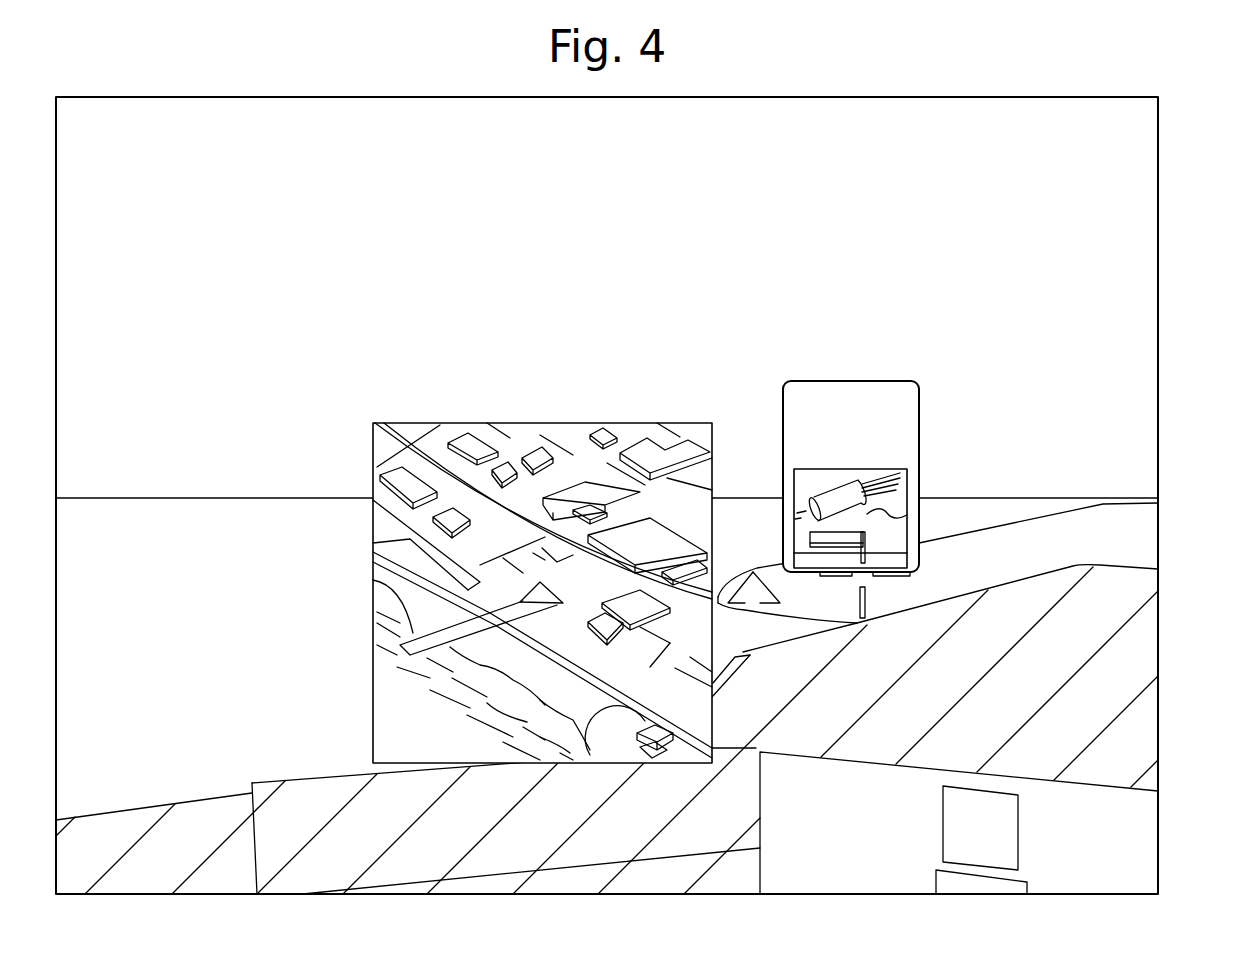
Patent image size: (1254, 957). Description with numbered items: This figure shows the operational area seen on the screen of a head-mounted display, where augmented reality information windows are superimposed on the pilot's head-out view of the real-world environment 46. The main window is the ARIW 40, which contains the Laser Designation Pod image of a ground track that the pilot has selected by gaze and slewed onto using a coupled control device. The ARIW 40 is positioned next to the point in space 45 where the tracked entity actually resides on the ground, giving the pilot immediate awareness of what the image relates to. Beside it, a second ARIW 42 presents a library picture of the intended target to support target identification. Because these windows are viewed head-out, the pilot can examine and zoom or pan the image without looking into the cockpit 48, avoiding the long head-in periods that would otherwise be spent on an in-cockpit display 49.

The ARIW 40 is at (635, 422).
The second ARIW 42 is at (919, 431).
The point in space 45 is at (768, 588).
The real-world environment 46 is at (1118, 243).
The cockpit 48 is at (1098, 618).
The in-cockpit display 49 is at (1118, 805).